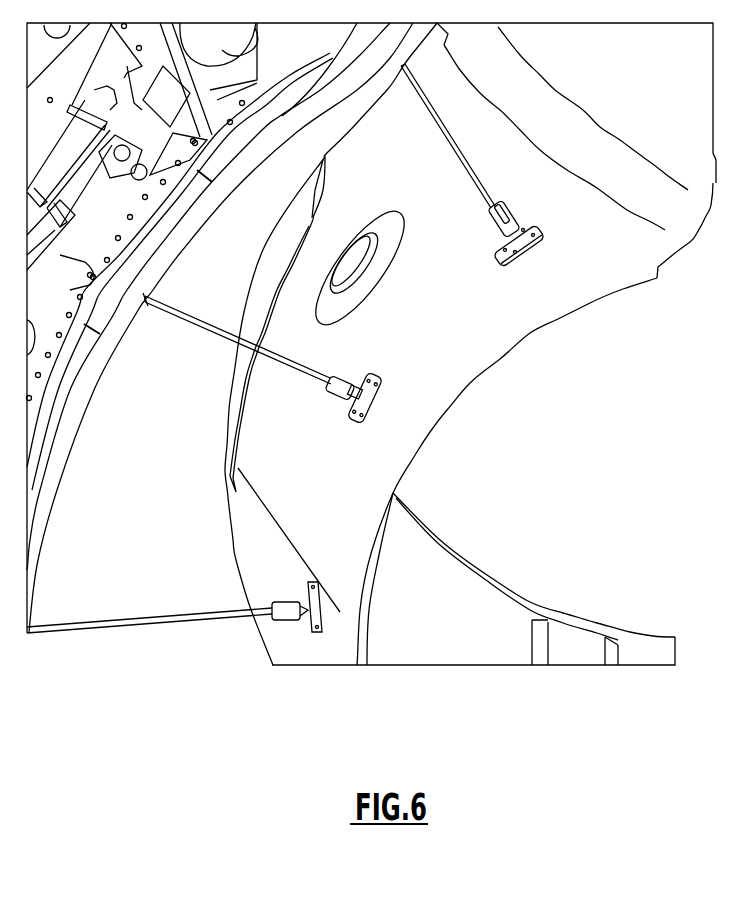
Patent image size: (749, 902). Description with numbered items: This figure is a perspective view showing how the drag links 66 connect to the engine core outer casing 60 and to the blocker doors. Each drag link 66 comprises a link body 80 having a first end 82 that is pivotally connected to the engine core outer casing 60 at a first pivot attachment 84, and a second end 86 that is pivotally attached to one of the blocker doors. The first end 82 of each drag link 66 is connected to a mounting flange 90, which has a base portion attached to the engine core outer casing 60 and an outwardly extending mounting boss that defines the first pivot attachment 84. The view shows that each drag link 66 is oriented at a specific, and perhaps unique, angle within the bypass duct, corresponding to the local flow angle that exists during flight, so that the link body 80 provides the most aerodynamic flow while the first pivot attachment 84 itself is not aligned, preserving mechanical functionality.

The engine core outer casing 60 is at (606, 268).
The drag link 66 is at (200, 352).
The link body 80 is at (200, 318).
The first end 82 is at (317, 380).
The first pivot attachment 84 is at (337, 407).
The second end 86 is at (143, 300).
The mounting flange 90 is at (380, 377).